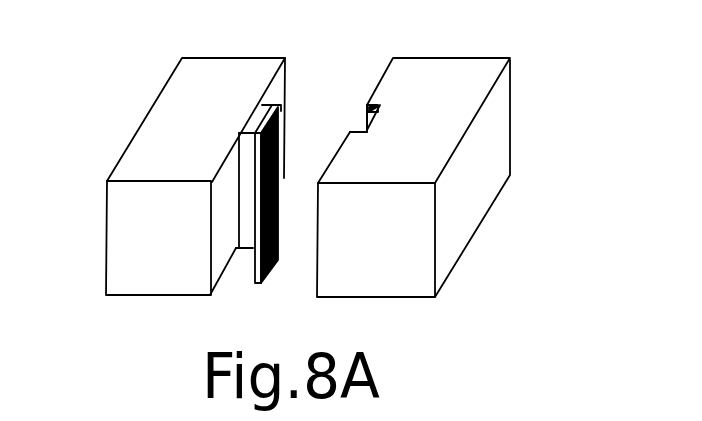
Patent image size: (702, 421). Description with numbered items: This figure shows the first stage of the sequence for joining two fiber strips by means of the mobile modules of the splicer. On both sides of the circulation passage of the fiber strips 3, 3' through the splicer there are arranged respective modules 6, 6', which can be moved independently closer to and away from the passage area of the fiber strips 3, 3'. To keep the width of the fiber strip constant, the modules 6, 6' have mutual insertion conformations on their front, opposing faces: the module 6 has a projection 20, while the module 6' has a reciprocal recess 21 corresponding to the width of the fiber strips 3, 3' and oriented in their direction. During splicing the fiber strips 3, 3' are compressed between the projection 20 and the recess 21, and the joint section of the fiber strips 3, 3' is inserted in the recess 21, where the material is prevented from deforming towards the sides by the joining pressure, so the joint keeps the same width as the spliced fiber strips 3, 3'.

The module 6 is at (161, 176).
The projection 20 is at (260, 115).
The fiber strip 3 is at (205, 252).
The module 6' is at (461, 177).
The fiber strip 3' is at (486, 99).
The recess 21 is at (368, 128).